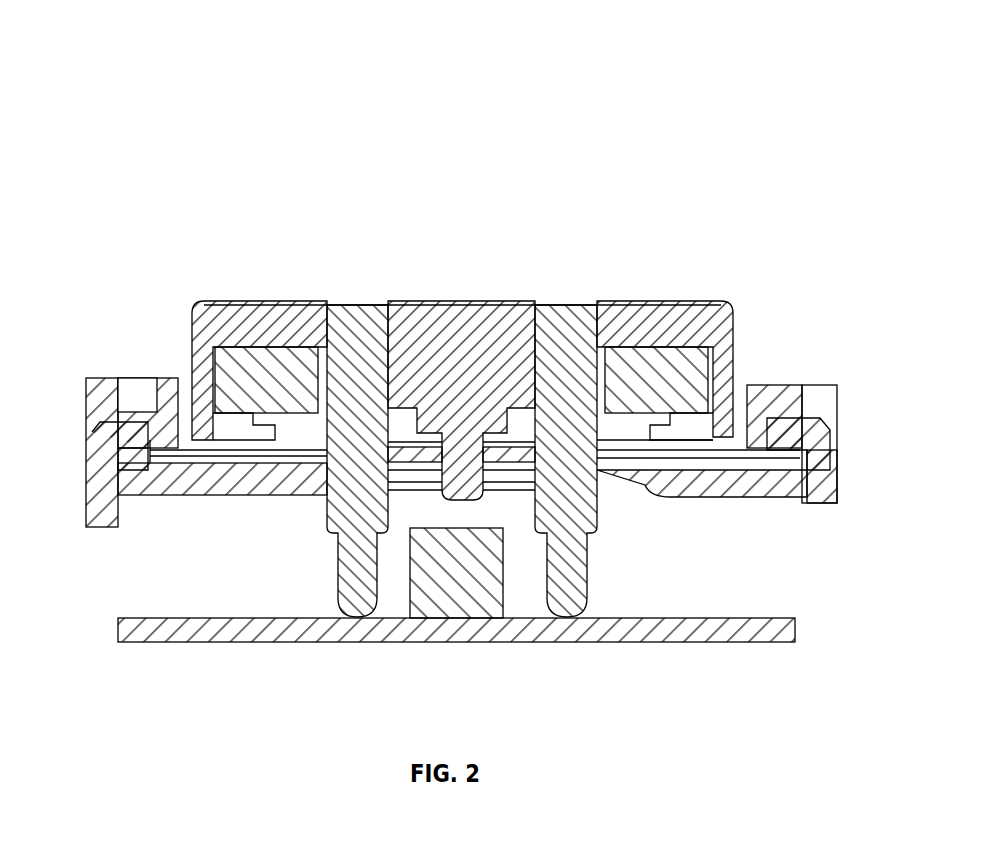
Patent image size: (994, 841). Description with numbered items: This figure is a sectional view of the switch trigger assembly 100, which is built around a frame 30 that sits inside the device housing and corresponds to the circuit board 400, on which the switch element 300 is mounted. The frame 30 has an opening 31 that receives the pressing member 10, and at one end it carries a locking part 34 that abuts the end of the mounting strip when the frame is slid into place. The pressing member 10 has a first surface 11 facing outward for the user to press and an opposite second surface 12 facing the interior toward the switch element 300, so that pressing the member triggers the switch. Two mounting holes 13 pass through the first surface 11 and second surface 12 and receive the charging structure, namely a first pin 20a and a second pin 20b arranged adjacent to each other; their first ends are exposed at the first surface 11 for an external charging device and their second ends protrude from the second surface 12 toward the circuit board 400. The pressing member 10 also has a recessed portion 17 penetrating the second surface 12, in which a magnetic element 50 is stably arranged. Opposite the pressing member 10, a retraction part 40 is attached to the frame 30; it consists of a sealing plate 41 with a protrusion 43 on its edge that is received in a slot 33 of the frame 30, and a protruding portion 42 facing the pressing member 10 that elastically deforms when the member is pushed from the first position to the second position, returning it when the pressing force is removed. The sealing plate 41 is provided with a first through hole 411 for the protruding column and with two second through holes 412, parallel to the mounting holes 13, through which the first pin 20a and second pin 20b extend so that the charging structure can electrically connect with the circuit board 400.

The switch trigger assembly 100 is at (393, 150).
The pressing member 10 is at (203, 312).
The first surface 11 is at (692, 297).
The second surface 12 is at (727, 388).
The mounting hole 13 is at (318, 328).
The recessed portion 17 is at (721, 372).
The first pin 20a is at (358, 345).
The second pin 20b is at (570, 340).
The frame 30 is at (142, 378).
The opening 31 is at (182, 378).
The slot 33 is at (114, 413).
The locking part 34 is at (820, 497).
The retraction part 40 is at (232, 575).
The sealing plate 41 is at (240, 480).
The protruding portion 42 is at (300, 447).
The protrusion 43 is at (108, 448).
The magnetic element 50 is at (650, 398).
The switch element 300 is at (415, 592).
The circuit board 400 is at (705, 642).
The first through hole 411 is at (487, 466).
The second through hole 412 is at (392, 466).